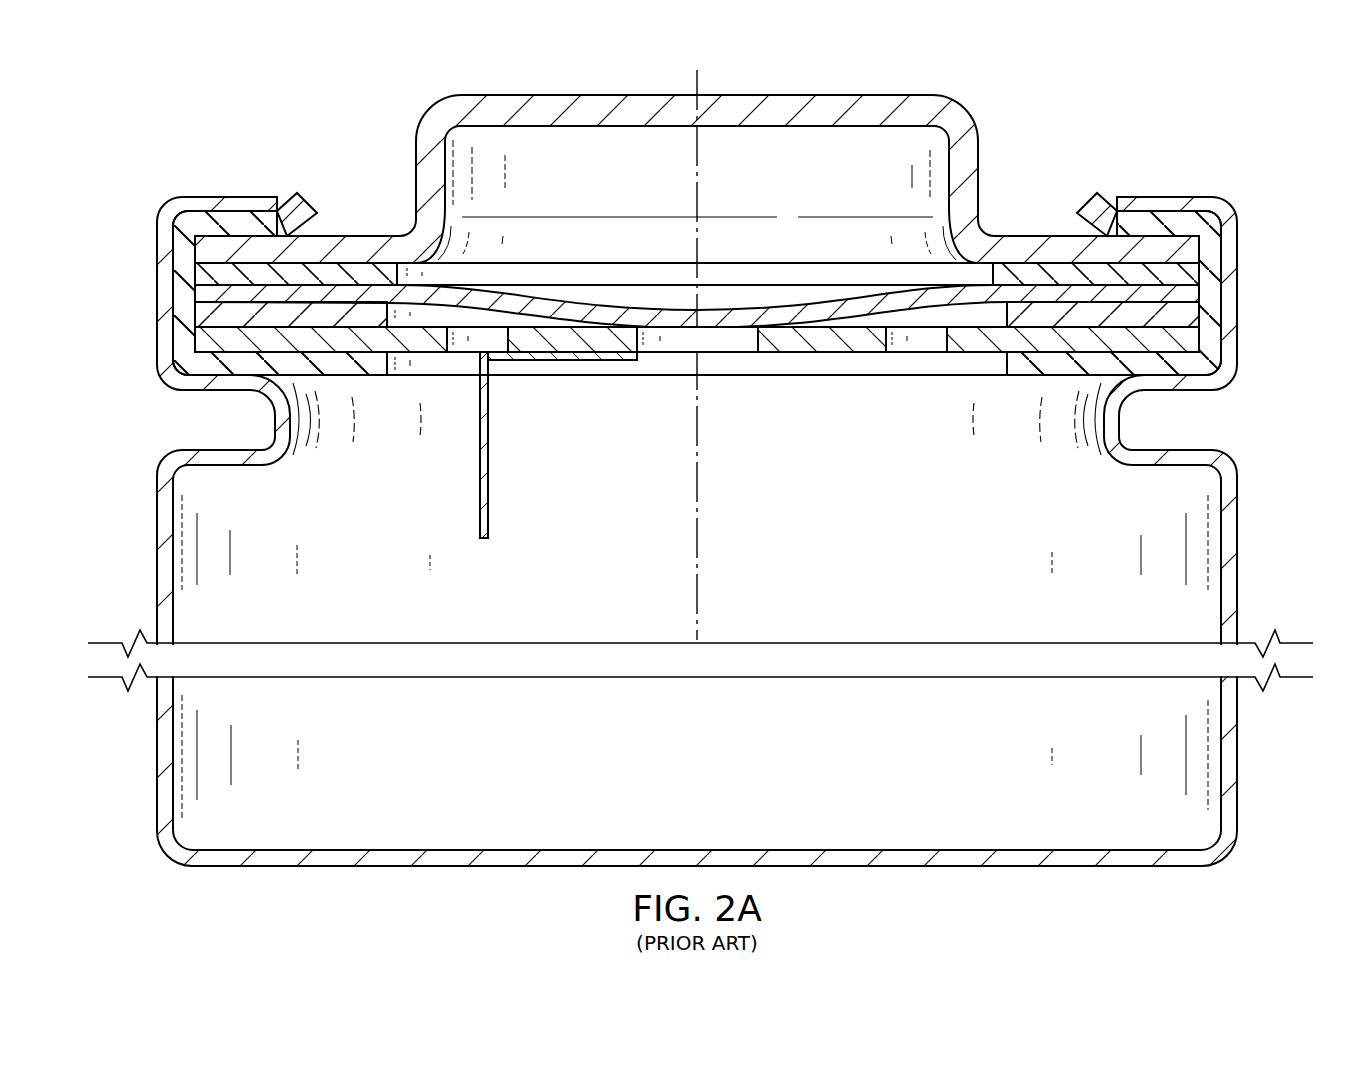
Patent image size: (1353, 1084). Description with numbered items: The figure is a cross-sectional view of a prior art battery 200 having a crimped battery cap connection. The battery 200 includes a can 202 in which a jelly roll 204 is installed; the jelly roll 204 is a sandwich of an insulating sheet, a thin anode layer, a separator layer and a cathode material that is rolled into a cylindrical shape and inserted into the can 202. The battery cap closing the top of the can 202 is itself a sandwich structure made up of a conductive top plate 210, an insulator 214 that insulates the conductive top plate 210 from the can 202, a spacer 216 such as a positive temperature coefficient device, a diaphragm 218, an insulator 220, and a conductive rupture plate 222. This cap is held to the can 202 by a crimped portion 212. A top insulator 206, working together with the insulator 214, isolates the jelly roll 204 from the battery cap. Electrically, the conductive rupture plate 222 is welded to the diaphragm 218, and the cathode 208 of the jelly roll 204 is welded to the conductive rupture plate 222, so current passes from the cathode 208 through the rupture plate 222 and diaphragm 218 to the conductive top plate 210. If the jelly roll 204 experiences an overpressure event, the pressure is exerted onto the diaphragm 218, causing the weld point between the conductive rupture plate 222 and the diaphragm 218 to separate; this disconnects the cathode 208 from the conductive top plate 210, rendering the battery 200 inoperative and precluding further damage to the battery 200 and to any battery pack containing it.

The battery 200 is at (700, 492).
The can 202 is at (1238, 797).
The jelly roll 204 is at (681, 766).
The top insulator 206 is at (903, 377).
The cathode 208 is at (478, 505).
The conductive top plate 210 is at (836, 95).
The crimped portion 212 is at (1173, 197).
The insulator 214 is at (1084, 196).
The spacer 216 is at (1062, 273).
The diaphragm 218 is at (895, 305).
The insulator 220 is at (1185, 313).
The conductive rupture plate 222 is at (960, 343).